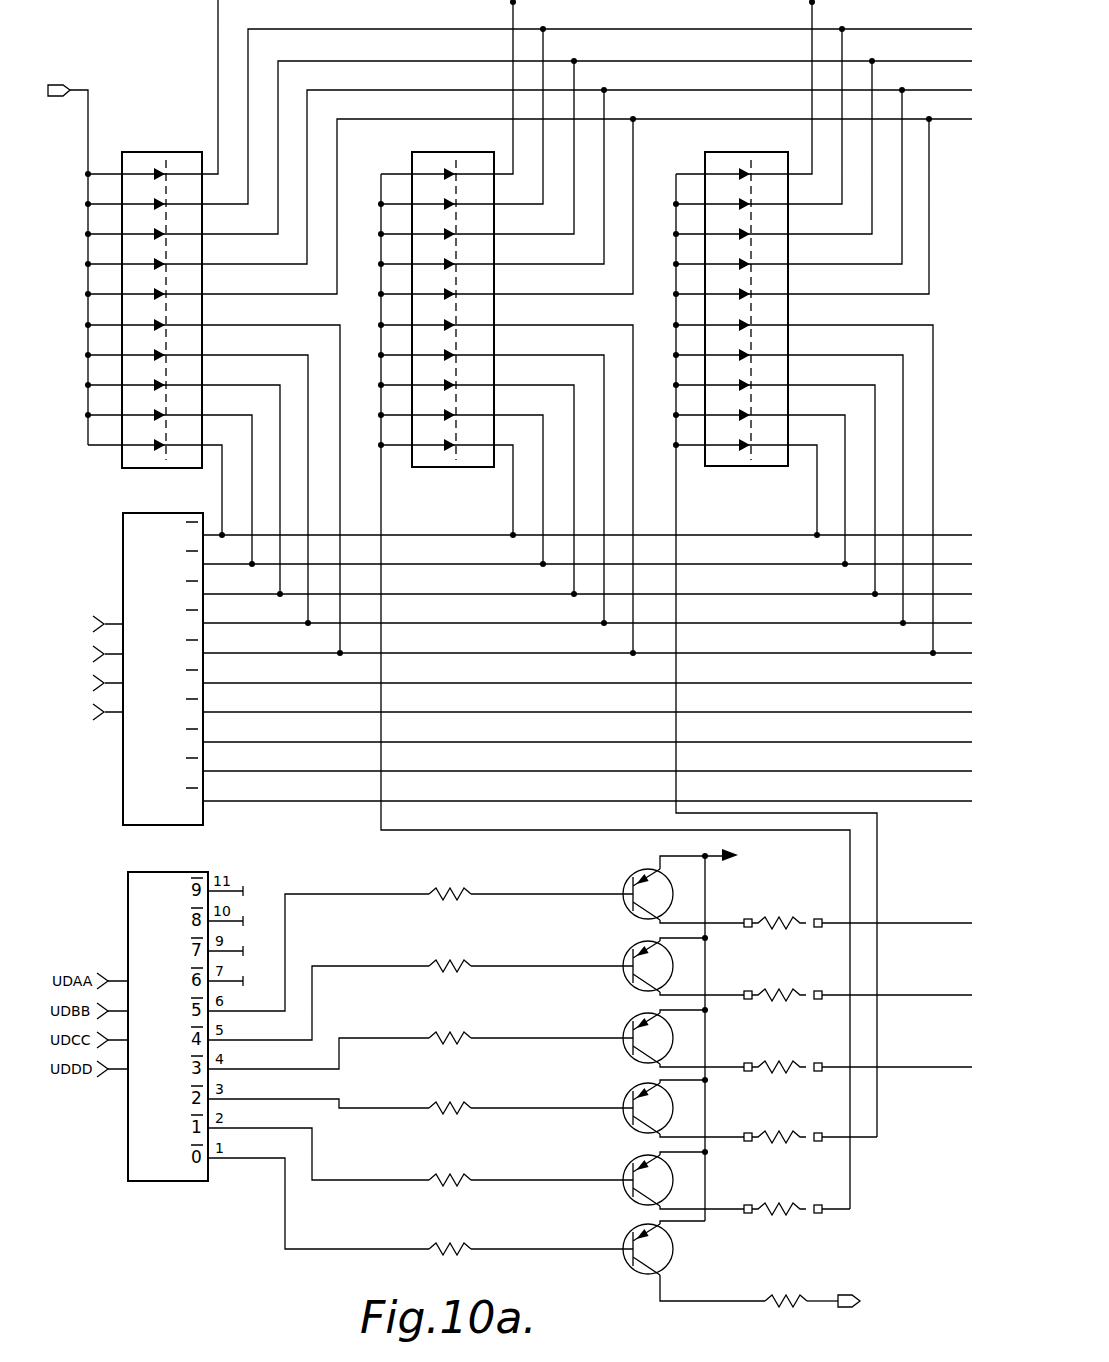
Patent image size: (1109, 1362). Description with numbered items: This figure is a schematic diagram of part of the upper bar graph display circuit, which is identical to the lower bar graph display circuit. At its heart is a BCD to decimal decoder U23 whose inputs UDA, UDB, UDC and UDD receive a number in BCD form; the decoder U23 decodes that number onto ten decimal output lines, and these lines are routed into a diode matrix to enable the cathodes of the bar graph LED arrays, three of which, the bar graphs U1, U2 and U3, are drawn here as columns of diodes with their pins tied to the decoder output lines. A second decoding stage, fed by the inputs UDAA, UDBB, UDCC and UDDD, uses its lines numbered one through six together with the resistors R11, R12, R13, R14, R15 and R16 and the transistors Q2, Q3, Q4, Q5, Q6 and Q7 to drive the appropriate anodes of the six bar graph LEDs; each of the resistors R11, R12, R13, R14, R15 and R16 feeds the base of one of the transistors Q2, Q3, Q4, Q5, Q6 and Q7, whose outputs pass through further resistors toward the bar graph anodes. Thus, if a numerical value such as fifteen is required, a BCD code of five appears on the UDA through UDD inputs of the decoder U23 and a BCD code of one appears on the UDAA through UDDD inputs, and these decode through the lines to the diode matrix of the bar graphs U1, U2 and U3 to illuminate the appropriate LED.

The bar graph U1 is at (172, 479).
The bar graph U2 is at (469, 477).
The bar graph U3 is at (767, 475).
The BCD to decimal decoder U23 is at (512, 669).
The transistor Q2 is at (630, 878).
The transistor Q3 is at (627, 950).
The transistor Q4 is at (627, 1022).
The transistor Q5 is at (627, 1092).
The transistor Q6 is at (627, 1164).
The transistor Q7 is at (627, 1233).
The resistor R11 is at (450, 882).
The resistor R12 is at (450, 954).
The resistor R13 is at (450, 1026).
The resistor R14 is at (450, 1096).
The resistor R15 is at (450, 1168).
The resistor R16 is at (450, 1237).